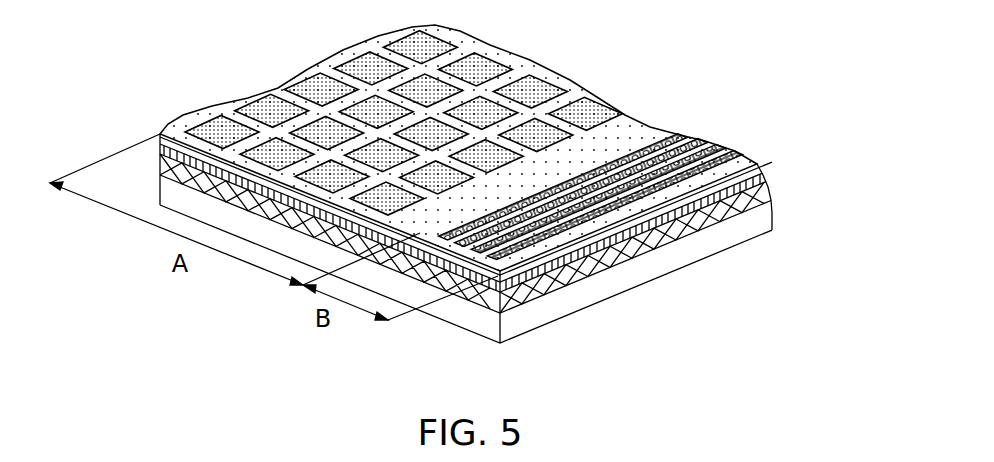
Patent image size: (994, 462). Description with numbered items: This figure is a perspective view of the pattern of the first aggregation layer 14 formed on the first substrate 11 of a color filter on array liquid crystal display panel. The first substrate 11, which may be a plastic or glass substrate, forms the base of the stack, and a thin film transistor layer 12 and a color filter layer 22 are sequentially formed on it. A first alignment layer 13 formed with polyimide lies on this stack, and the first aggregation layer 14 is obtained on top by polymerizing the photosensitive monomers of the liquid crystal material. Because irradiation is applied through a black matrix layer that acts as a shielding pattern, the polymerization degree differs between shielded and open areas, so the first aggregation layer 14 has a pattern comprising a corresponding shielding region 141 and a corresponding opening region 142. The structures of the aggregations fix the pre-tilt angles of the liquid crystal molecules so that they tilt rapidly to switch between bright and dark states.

The first substrate 11 is at (758, 220).
The thin film transistor layer 12 is at (771, 199).
The first alignment layer 13 is at (766, 176).
The first aggregation layer 14 is at (496, 145).
The corresponding shielding region 141 is at (620, 138).
The corresponding opening region 142 is at (537, 92).
The color filter layer 22 is at (769, 188).